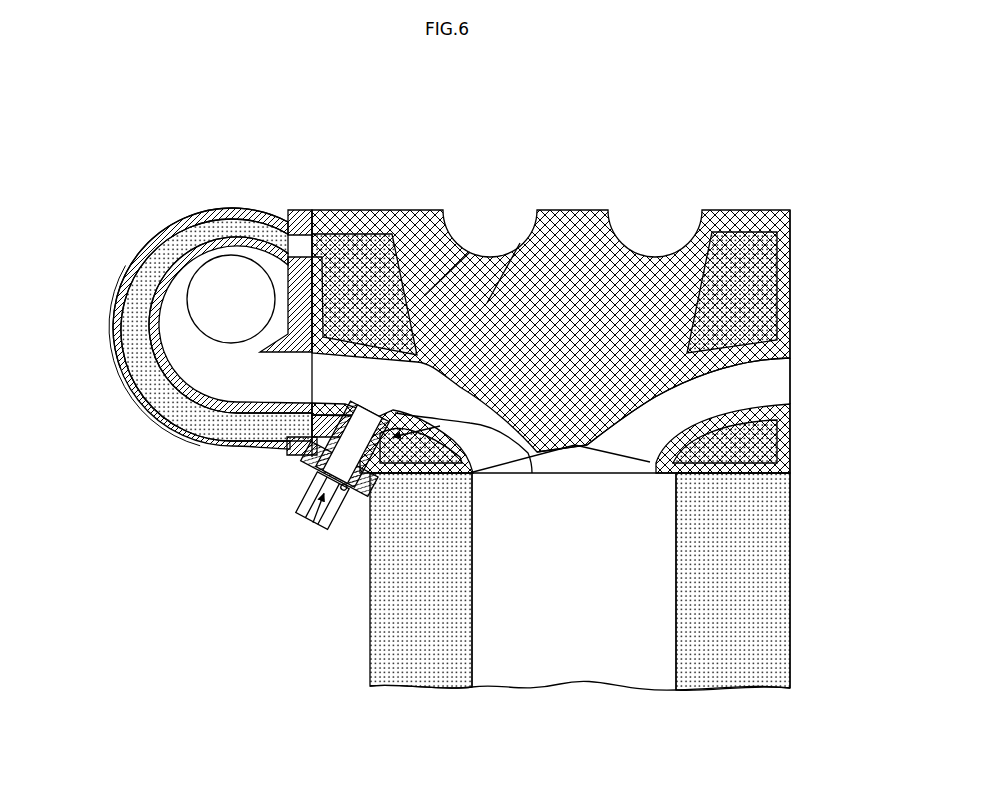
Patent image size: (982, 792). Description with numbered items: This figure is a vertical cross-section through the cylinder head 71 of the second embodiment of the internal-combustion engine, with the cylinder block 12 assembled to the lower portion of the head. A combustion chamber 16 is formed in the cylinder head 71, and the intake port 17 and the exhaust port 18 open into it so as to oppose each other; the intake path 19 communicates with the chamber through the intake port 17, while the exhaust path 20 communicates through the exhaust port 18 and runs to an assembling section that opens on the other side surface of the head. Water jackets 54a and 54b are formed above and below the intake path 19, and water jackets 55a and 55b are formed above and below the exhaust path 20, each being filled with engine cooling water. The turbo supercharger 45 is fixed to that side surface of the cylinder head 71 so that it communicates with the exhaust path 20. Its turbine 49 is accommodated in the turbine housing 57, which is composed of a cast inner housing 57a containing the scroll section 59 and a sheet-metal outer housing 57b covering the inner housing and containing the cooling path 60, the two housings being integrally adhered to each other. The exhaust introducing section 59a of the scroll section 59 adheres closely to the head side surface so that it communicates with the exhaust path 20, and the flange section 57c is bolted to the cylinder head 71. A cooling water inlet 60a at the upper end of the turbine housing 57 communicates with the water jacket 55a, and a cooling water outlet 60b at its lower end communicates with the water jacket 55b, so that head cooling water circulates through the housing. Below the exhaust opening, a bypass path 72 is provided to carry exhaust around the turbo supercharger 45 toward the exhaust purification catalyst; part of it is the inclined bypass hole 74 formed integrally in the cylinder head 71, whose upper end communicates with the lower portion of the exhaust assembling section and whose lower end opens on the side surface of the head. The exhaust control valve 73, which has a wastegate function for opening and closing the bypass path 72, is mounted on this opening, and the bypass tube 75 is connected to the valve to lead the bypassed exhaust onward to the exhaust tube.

The cylinder block 12 is at (776, 617).
The combustion chamber 16 is at (573, 450).
The intake port 17 is at (632, 447).
The exhaust port 18 is at (497, 450).
The intake path 19 is at (750, 382).
The exhaust path 20 is at (470, 252).
The turbo supercharger 45 is at (152, 141).
The turbine 49 is at (208, 277).
The water jacket 54a is at (758, 242).
The water jacket 54b is at (782, 431).
The water jacket 55a is at (373, 237).
The water jacket 55b is at (370, 545).
The turbine housing 57 is at (157, 216).
The inner housing 57a is at (243, 213).
The outer housing 57b is at (115, 268).
The flange section 57c is at (298, 211).
The scroll section 59 is at (133, 407).
The exhaust introducing section 59a is at (197, 443).
The cooling path 60 is at (127, 336).
The cooling water inlet 60a is at (330, 223).
The cooling water outlet 60b is at (288, 446).
The cylinder head 71 is at (600, 197).
The bypass path 72 is at (530, 452).
The exhaust control valve 73 is at (318, 488).
The bypass hole 74 is at (520, 243).
The bypass tube 75 is at (281, 499).